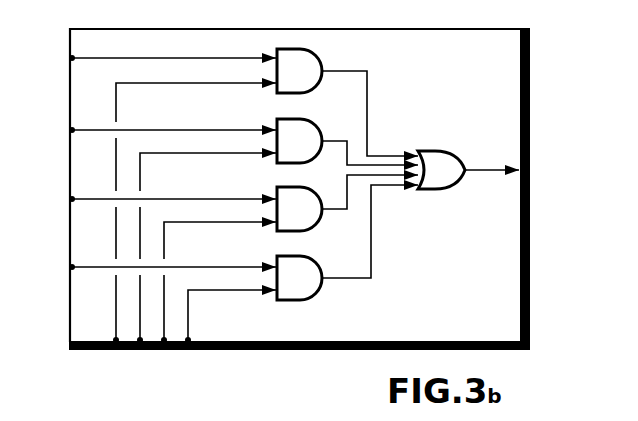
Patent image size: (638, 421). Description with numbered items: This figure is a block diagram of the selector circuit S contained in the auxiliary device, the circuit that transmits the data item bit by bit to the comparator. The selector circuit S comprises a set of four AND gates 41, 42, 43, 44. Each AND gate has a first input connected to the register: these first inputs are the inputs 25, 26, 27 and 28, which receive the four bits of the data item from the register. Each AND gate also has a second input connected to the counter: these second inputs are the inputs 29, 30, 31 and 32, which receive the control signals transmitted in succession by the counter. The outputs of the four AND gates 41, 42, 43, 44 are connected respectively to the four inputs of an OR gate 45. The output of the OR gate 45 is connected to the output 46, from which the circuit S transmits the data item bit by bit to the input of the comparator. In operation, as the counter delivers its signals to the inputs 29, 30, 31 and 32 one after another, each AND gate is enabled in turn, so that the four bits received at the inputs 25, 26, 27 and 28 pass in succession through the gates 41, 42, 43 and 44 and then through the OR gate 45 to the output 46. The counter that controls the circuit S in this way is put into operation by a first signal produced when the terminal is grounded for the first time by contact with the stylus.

The selector circuit S is at (299, 189).
The input 25 is at (159, 56).
The input 26 is at (159, 128).
The input 27 is at (159, 197).
The input 28 is at (159, 265).
The input 29 is at (116, 350).
The input 30 is at (140, 350).
The input 31 is at (164, 350).
The input 32 is at (188, 350).
The AND gate 41 is at (305, 63).
The AND gate 42 is at (307, 133).
The AND gate 43 is at (305, 204).
The AND gate 44 is at (307, 275).
The OR gate 45 is at (435, 160).
The output 46 is at (518, 166).